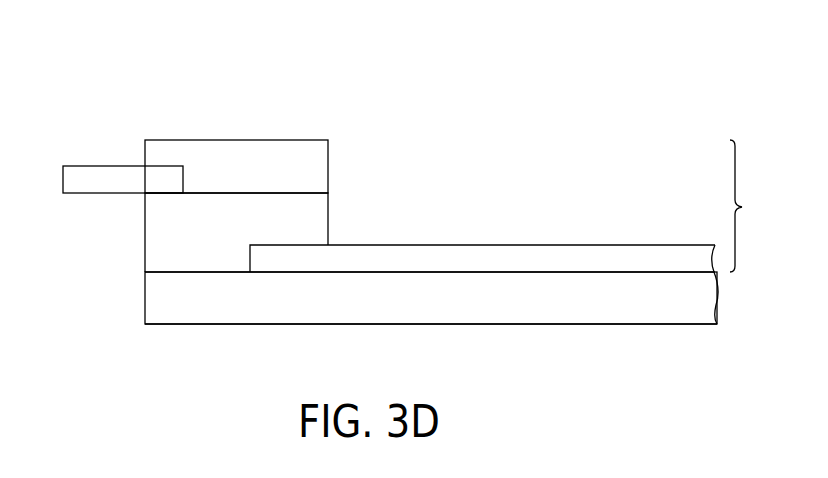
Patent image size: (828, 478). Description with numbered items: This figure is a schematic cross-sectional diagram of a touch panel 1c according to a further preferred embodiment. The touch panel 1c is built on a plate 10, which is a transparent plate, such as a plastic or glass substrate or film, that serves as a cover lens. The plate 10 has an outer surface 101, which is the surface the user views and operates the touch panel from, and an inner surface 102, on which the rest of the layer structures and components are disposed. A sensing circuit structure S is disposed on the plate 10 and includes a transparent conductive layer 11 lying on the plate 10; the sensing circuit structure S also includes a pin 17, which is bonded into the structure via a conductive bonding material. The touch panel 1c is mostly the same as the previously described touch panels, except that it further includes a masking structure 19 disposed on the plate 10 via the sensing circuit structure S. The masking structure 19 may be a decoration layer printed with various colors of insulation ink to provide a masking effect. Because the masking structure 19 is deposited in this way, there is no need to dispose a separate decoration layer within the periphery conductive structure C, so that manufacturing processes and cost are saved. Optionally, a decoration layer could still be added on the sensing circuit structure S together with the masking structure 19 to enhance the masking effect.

The touch panel 1c is at (122, 55).
The plate 10 is at (162, 303).
The outer surface 101 is at (160, 325).
The inner surface 102 is at (160, 271).
The transparent conductive layer 11 is at (625, 257).
The pin 17 is at (108, 173).
The masking structure 19 is at (264, 159).
The periphery conductive structure C is at (305, 218).
The sensing circuit structure S is at (747, 206).